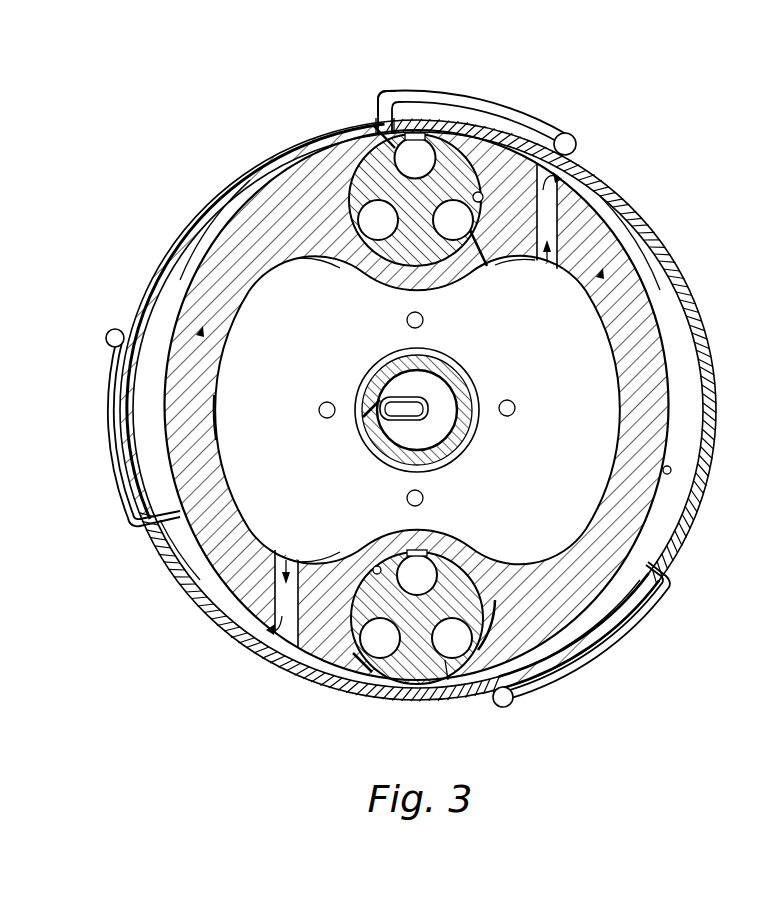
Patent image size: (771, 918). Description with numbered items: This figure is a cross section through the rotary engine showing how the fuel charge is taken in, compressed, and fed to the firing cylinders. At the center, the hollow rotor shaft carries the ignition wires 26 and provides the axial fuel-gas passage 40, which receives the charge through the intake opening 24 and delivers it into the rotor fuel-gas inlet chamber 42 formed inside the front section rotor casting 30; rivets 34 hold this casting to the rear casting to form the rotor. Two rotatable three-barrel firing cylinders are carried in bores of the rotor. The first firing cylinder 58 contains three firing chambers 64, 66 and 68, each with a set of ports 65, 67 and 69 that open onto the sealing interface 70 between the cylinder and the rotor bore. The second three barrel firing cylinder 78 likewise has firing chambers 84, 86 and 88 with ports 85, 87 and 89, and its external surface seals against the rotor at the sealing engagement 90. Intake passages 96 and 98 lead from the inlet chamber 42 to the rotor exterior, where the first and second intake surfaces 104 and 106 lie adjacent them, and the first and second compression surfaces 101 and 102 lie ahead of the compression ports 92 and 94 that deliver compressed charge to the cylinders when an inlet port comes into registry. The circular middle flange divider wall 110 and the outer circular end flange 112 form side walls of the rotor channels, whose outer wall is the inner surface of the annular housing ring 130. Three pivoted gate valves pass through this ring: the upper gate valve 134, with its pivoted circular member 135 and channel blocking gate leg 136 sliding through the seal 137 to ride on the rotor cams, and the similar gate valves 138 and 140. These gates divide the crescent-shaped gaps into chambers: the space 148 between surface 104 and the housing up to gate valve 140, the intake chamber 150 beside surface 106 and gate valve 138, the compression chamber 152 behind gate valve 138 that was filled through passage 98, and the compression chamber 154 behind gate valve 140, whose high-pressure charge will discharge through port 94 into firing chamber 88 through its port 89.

The intake opening 24 is at (372, 425).
The ignition wires 26 is at (447, 417).
The front section rotor casting 30 is at (200, 394).
The rivets 34 is at (405, 320).
The axial fuel-gas passage 40 is at (440, 390).
The rotor fuel-gas inlet chamber 42 is at (297, 356).
The firing cylinder 58 is at (406, 203).
The firing chamber 64 is at (403, 169).
The set of ports 65 is at (420, 132).
The firing chamber 66 is at (366, 231).
The set of ports 67 is at (350, 248).
The firing chamber 68 is at (441, 231).
The set of ports 69 is at (512, 268).
The sealing interface 70 is at (484, 198).
The second three barrel firing cylinder 78 is at (406, 617).
The firing cylinder 84 is at (405, 586).
The set of ports 85 is at (430, 530).
The firing cylinder 86 is at (368, 649).
The set of inlet ports 87 is at (365, 650).
The firing cylinder 88 is at (440, 649).
The set of inlet ports 89 is at (478, 650).
The sealing engagement 90 is at (368, 562).
The compression port 92 is at (426, 195).
The compression port 94 is at (447, 632).
The intake passage 96 is at (550, 260).
The intake passage 98 is at (290, 565).
The first compression surface 101 is at (205, 442).
The second compression surface 102 is at (548, 630).
The first intake surface 104 is at (521, 170).
The second intake surface 106 is at (200, 563).
The circular middle flange divider wall 110 is at (205, 357).
The outer circular end flange 112 is at (468, 405).
The annular housing ring 130 is at (180, 232).
The upper gate valve 134 is at (470, 95).
The pivoted circular member 135 is at (572, 135).
The channel blocking gate leg 136 is at (384, 88).
The seal 137 is at (376, 124).
The gate valve 138 is at (118, 500).
The gate valve 140 is at (663, 628).
The space 148 is at (616, 251).
The intake chamber 150 is at (171, 559).
The compression chamber 152 is at (181, 266).
The compression chamber 154 is at (588, 609).